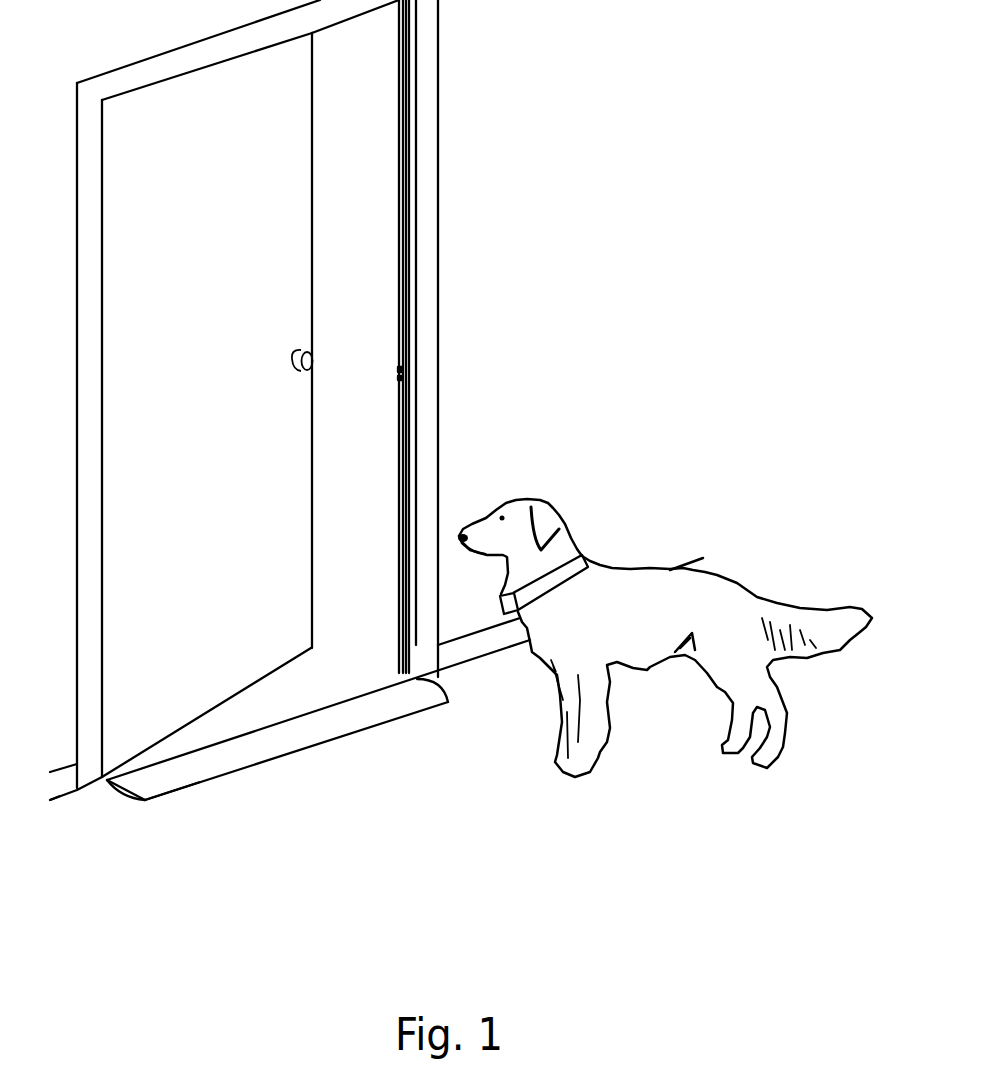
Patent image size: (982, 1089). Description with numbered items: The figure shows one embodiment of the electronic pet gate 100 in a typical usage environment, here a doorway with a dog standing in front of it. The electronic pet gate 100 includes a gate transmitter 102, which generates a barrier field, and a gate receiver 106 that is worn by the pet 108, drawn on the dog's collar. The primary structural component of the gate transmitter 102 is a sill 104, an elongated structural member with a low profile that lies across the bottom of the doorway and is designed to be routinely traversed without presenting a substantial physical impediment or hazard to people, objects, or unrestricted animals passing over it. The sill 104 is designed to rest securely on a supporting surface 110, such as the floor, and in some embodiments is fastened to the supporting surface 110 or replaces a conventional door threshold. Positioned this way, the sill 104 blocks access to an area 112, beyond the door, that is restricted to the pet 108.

The electronic pet gate 100 is at (633, 278).
The gate transmitter 102 is at (161, 801).
The sill 104 is at (245, 753).
The gate receiver 106 is at (507, 613).
The pet 108 is at (632, 660).
The supporting surface 110 is at (355, 842).
The area 112 is at (359, 246).